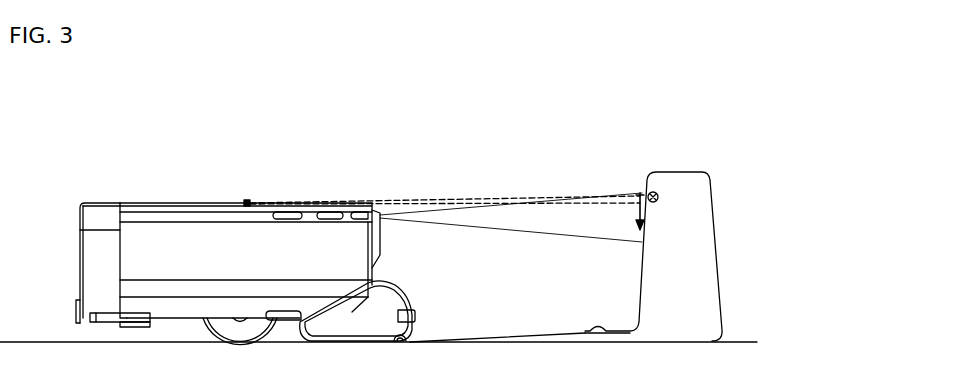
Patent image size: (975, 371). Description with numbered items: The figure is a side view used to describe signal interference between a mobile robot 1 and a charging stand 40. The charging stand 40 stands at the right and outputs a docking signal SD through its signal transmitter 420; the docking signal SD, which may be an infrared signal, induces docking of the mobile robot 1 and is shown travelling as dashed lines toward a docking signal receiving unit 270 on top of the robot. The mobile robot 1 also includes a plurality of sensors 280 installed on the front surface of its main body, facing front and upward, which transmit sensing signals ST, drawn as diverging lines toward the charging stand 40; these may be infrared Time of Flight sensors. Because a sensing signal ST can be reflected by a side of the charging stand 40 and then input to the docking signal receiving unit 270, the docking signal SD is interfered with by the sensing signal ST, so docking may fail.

The mobile robot 1 is at (175, 243).
The docking signal receiving unit 270 is at (246, 201).
The plurality of sensors 280 is at (362, 211).
The signal transmitter 420 is at (656, 191).
The charging stand 40 is at (702, 242).
The docking signal SD is at (448, 197).
The sensing signals ST is at (506, 231).